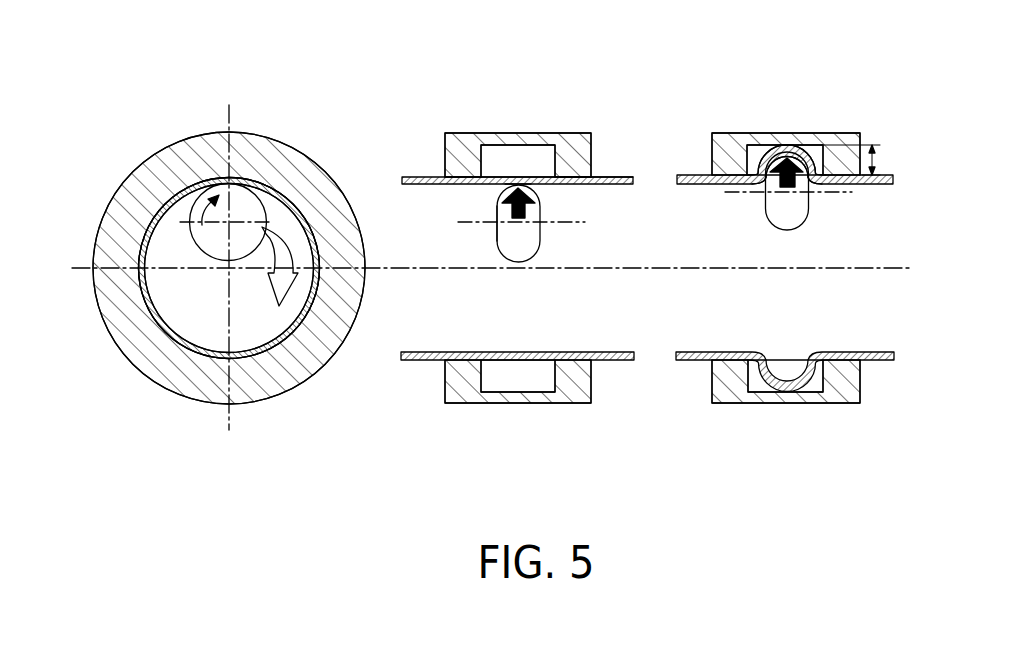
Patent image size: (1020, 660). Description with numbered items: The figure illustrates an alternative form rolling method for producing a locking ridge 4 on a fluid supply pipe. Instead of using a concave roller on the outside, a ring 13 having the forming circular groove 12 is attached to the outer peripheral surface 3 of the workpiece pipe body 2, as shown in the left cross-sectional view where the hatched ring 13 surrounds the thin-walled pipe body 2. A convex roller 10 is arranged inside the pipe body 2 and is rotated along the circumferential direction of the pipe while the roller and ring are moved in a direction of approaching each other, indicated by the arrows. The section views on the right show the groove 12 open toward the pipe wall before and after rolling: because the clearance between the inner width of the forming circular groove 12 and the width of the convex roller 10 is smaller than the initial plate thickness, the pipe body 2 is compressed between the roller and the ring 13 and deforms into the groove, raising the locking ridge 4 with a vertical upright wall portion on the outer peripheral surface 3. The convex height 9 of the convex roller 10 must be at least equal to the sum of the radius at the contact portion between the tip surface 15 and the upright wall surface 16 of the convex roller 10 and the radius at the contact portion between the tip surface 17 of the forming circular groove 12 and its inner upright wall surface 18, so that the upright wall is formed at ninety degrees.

The workpiece pipe body 2 is at (305, 227).
The outer peripheral surface 3 is at (608, 176).
The locking ridge 4 is at (808, 157).
The convex height 9 is at (877, 163).
The convex roller 10 is at (217, 250).
The forming circular groove 12 is at (517, 380).
The ring 13 is at (253, 150).
The tip surface 15 is at (517, 185).
The upright wall surface 16 is at (498, 210).
The tip surface of the forming circular groove 17 is at (458, 177).
The inner upright wall surface 18 is at (555, 158).